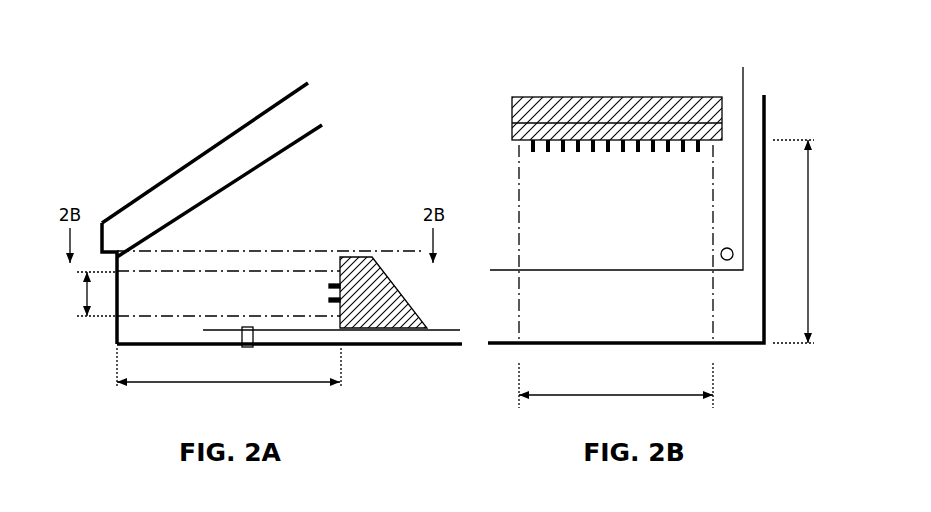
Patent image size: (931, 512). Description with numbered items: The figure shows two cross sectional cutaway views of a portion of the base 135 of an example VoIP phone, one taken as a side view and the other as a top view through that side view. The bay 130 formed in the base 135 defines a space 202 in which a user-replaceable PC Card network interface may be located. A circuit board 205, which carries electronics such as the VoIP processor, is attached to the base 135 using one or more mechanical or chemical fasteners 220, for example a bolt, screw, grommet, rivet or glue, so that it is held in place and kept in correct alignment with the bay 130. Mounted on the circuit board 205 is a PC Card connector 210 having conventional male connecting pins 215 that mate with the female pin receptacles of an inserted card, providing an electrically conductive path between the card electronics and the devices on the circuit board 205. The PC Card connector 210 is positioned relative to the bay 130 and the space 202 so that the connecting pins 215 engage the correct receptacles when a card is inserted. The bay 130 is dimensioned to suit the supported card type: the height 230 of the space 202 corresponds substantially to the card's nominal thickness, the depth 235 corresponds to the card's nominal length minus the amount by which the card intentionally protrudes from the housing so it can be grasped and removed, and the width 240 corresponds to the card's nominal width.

In FIG. 2A, the bay 130 is at (257, 270).
In FIG. 2B, the bay 130 is at (519, 315).
In FIG. 2A, the base 135 is at (457, 346).
In FIG. 2B, the base 135 is at (728, 345).
In FIG. 2A, the space 202 is at (145, 297).
In FIG. 2B, the space 202 is at (552, 236).
In FIG. 2A, the circuit board 205 is at (332, 331).
In FIG. 2B, the circuit board 205 is at (742, 93).
In FIG. 2A, the PC Card connector 210 is at (357, 256).
In FIG. 2B, the PC Card connector 210 is at (528, 96).
In FIG. 2A, the connecting pins 215 is at (334, 285).
In FIG. 2B, the connecting pins 215 is at (534, 153).
In FIG. 2A, the fasteners 220 is at (243, 326).
In FIG. 2B, the fasteners 220 is at (722, 250).
In FIG. 2A, the height 230 is at (89, 294).
In FIG. 2A, the depth 235 is at (229, 368).
In FIG. 2B, the depth 235 is at (793, 241).
In FIG. 2B, the width 240 is at (616, 385).